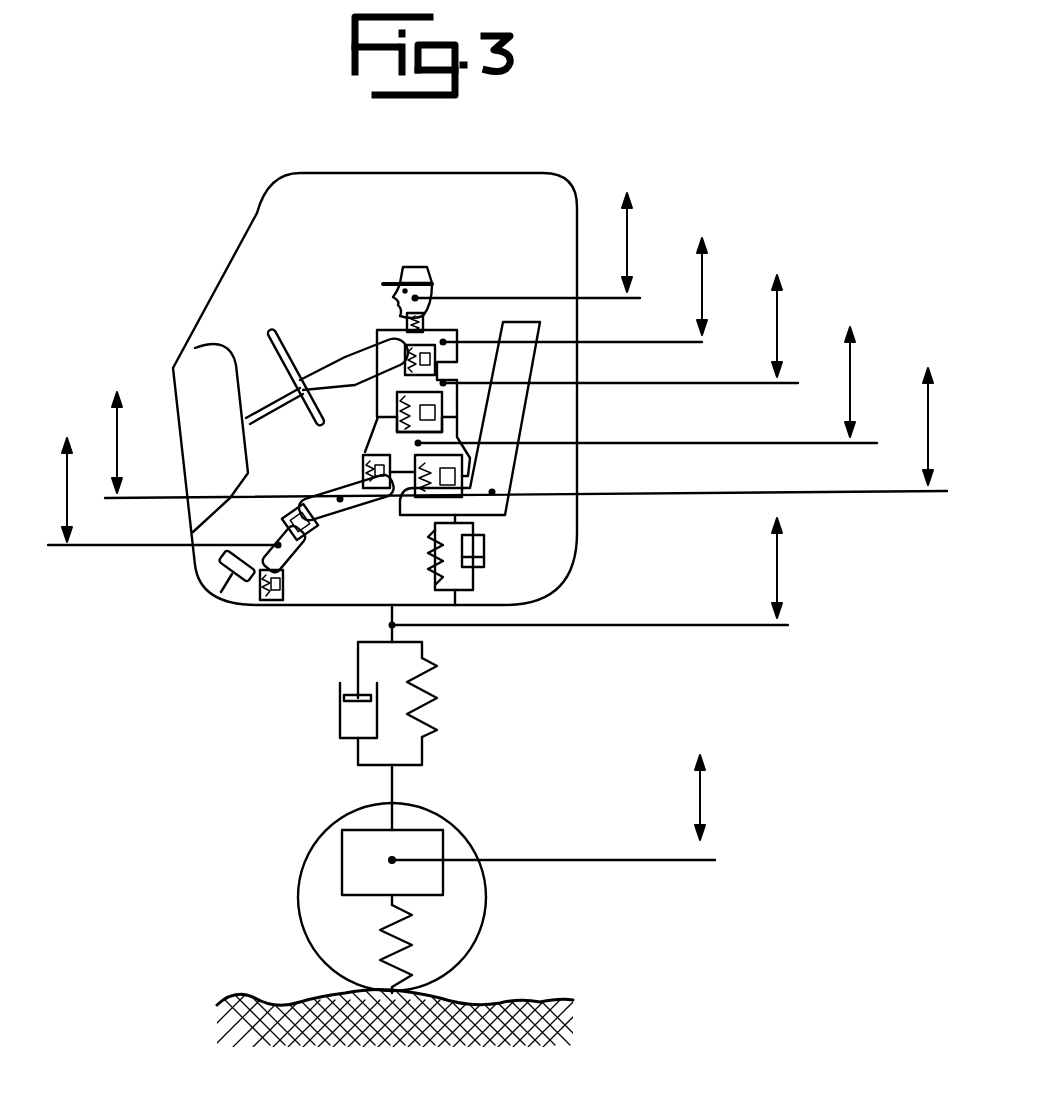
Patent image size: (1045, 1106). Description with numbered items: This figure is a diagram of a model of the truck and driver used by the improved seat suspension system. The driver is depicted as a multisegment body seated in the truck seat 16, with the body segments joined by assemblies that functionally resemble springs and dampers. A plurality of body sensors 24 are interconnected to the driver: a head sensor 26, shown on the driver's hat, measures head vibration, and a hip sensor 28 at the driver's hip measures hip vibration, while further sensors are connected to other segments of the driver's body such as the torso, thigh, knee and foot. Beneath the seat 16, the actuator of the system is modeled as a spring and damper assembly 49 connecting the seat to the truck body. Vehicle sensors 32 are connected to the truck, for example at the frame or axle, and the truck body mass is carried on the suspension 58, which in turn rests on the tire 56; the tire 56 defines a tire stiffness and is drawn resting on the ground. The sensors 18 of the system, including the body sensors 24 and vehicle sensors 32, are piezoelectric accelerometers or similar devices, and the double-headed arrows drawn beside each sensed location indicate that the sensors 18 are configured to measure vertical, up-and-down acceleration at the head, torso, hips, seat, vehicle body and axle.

The sensors 18 is at (692, 156).
The body sensors 24 is at (413, 250).
The head sensor 26 is at (420, 290).
The hip sensor 28 is at (373, 438).
The truck seat 16 is at (538, 322).
The spring and damper assembly 49 is at (497, 557).
The vehicle sensors 32 is at (820, 634).
The suspension 58 is at (462, 699).
The tire 56 is at (307, 854).